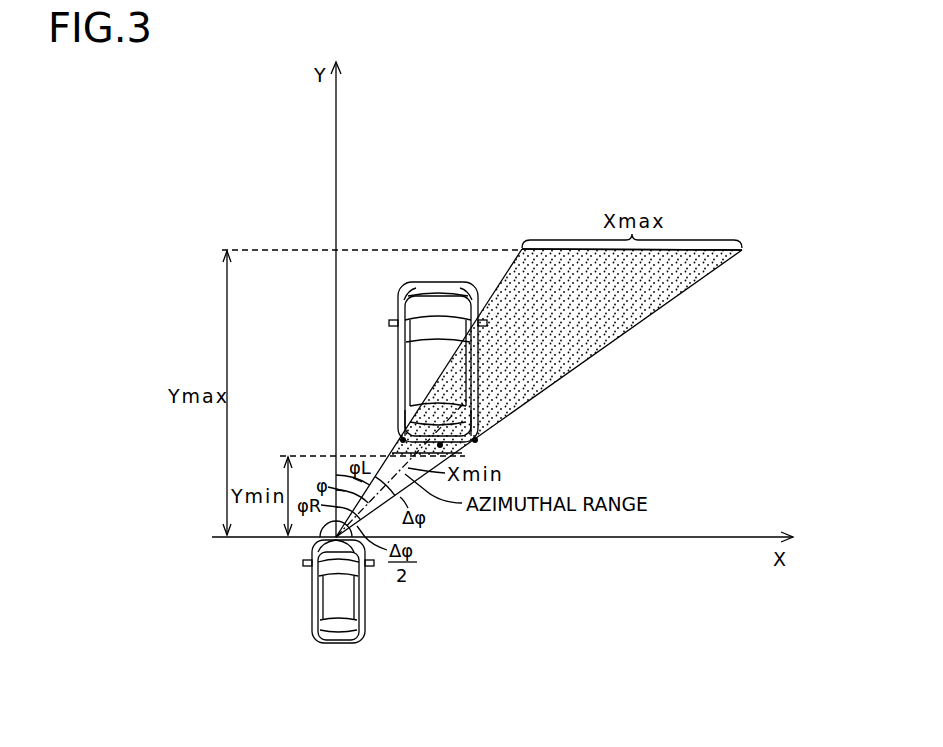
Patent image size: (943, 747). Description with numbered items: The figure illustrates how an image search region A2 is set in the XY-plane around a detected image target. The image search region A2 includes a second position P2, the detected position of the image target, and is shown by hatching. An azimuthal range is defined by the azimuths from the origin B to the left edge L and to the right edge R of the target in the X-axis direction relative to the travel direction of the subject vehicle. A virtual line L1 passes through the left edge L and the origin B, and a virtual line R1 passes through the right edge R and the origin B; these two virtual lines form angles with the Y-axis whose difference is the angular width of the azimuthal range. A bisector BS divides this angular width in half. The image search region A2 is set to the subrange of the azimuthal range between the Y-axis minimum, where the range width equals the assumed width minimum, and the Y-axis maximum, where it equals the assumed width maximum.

The virtual line L1 is at (505, 275).
The virtual line R1 is at (615, 340).
The bisector BS is at (565, 352).
The image search region A2 is at (653, 297).
The second position P2 is at (445, 447).
The origin B is at (313, 530).
The left edge L is at (391, 439).
The right edge R is at (486, 448).